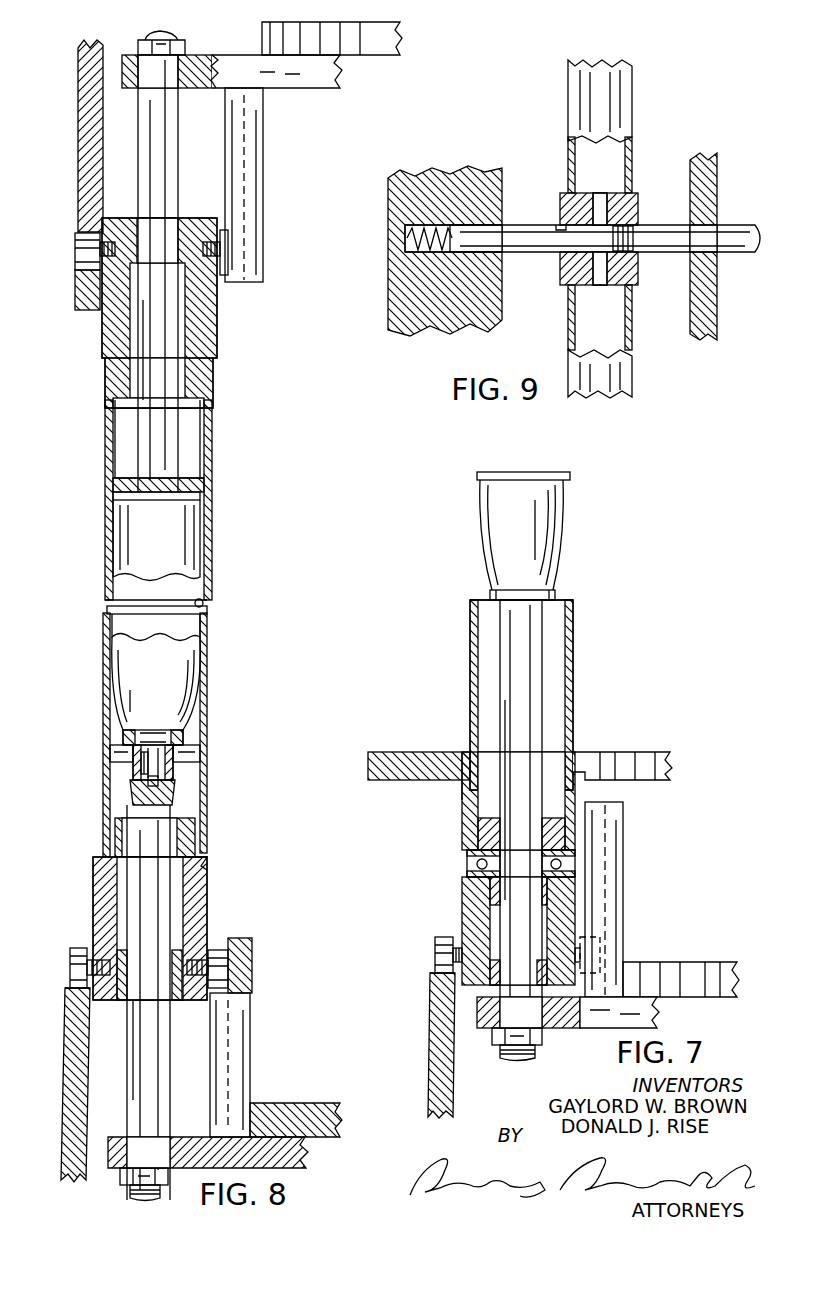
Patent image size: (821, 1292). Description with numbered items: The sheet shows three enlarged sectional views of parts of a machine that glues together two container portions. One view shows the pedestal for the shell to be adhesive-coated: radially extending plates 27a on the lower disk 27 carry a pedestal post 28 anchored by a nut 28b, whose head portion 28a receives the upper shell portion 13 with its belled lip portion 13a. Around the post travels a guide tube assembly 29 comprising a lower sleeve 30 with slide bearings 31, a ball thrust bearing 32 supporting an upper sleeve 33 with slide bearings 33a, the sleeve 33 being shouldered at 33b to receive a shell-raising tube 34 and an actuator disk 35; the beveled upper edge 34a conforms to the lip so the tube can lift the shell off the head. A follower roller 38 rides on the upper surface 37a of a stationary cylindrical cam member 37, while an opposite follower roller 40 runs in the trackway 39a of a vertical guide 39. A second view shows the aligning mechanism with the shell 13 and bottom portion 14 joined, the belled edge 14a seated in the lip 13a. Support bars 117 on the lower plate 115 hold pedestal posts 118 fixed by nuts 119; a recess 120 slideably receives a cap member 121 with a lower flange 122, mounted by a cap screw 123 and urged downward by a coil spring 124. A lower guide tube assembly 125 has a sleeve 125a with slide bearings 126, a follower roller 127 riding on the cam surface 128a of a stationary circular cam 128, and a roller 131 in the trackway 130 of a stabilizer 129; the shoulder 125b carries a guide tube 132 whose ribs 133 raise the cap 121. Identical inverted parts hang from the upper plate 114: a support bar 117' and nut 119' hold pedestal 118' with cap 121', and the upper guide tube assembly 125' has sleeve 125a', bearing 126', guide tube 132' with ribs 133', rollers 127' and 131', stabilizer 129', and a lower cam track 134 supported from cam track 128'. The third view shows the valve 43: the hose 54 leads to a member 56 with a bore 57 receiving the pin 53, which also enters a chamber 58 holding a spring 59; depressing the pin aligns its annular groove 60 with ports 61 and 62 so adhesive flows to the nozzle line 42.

In FIG. 8, the stationary cam track 128' is at (114, 119).
In FIG. 8, the follower roller 127' is at (62, 257).
In FIG. 8, the lower cam track 134 is at (80, 298).
In FIG. 8, the support bar 117' is at (232, 47).
In FIG. 8, the upper disk or plate 114 is at (378, 50).
In FIG. 8, the nut 119' is at (178, 31).
In FIG. 8, the stabilizer or guide 129' is at (280, 185).
In FIG. 8, the slide bearing 126' is at (154, 264).
In FIG. 8, the follower roller 131' is at (238, 270).
In FIG. 8, the sleeve 125a' is at (193, 361).
In FIG. 8, the upper guide tube assembly 125' is at (203, 313).
In FIG. 8, the guide tube 132' is at (191, 500).
In FIG. 8, the ribs 133' is at (122, 486).
In FIG. 8, the cap 121' is at (120, 509).
In FIG. 8, the bottom portion 14 is at (186, 540).
In FIG. 8, the belled edge 14a is at (205, 598).
In FIG. 8, the lip portion 13a is at (205, 612).
In FIG. 7, the lip portion 13a is at (566, 470).
In FIG. 8, the guide tube 132 is at (184, 735).
In FIG. 8, the upper shell portion 13 is at (190, 668).
In FIG. 7, the upper shell portion 13 is at (555, 536).
In FIG. 8, the cap member 121 is at (194, 726).
In FIG. 8, the ribs or shoulders 133 is at (187, 746).
In FIG. 8, the coil spring 124 is at (176, 776).
In FIG. 8, the socket-headed cap screw 123 is at (140, 772).
In FIG. 8, the recess 120 is at (132, 788).
In FIG. 8, the lower flange 122 is at (133, 802).
In FIG. 8, the slide bearings 126 is at (195, 821).
In FIG. 8, the sleeve 125a is at (187, 928).
In FIG. 8, the shoulder 125b is at (208, 864).
In FIG. 8, the lower guide tube assembly 125 is at (196, 878).
In FIG. 8, the follower roller 127 is at (61, 968).
In FIG. 8, the cam surface 128a is at (72, 995).
In FIG. 8, the stationary circular cam 128 is at (51, 1085).
In FIG. 8, the follower roller 131 is at (218, 942).
In FIG. 8, the trackway 130 is at (243, 940).
In FIG. 8, the stabilizer or guide 129 is at (260, 1047).
In FIG. 8, the pedestal post 118' is at (182, 273).
In FIG. 8, the pedestal post 118 is at (168, 1002).
In FIG. 8, the lower disk or plate 115 is at (295, 1112).
In FIG. 8, the support bars 117 is at (237, 1152).
In FIG. 8, the nuts 119 is at (119, 1184).
In FIG. 9, the valve 43 is at (440, 180).
In FIG. 9, the chamber 58 is at (405, 230).
In FIG. 9, the spring 59 is at (408, 240).
In FIG. 9, the pin 53 is at (736, 236).
In FIG. 9, the bore 57 is at (560, 228).
In FIG. 9, the annular groove 60 is at (634, 252).
In FIG. 9, the flexible hose 54 is at (615, 166).
In FIG. 9, the member 56 is at (637, 212).
In FIG. 9, the port 61 is at (596, 198).
In FIG. 9, the port 62 is at (598, 282).
In FIG. 9, the nozzle line 42 is at (616, 322).
In FIG. 7, the head portion 28a is at (557, 592).
In FIG. 7, the beveled upper edge 34a is at (575, 606).
In FIG. 7, the shell-raising tube 34 is at (573, 640).
In FIG. 7, the guide tube assembly 29 is at (575, 722).
In FIG. 7, the actuator disk 35 is at (632, 758).
In FIG. 7, the upper sleeve 33 is at (470, 808).
In FIG. 7, the shoulder 33b is at (461, 790).
In FIG. 7, the slide bearings 33a is at (480, 840).
In FIG. 7, the ball thrust bearing 32 is at (462, 865).
In FIG. 7, the lower sleeve 30 is at (470, 896).
In FIG. 7, the slide bearings 31 is at (492, 900).
In FIG. 7, the pedestal post 28 is at (530, 690).
In FIG. 7, the follower roller 38 is at (438, 956).
In FIG. 7, the upper surface 37a is at (437, 982).
In FIG. 7, the stationary cylindrical cam member 37 is at (430, 992).
In FIG. 7, the follower roller 40 is at (600, 926).
In FIG. 7, the vertical track or guide 39 is at (616, 880).
In FIG. 7, the trackway 39a is at (606, 846).
In FIG. 7, the lower disk 27 is at (686, 970).
In FIG. 7, the radially extending plates 27a is at (592, 1016).
In FIG. 7, the nut 28b is at (500, 1044).